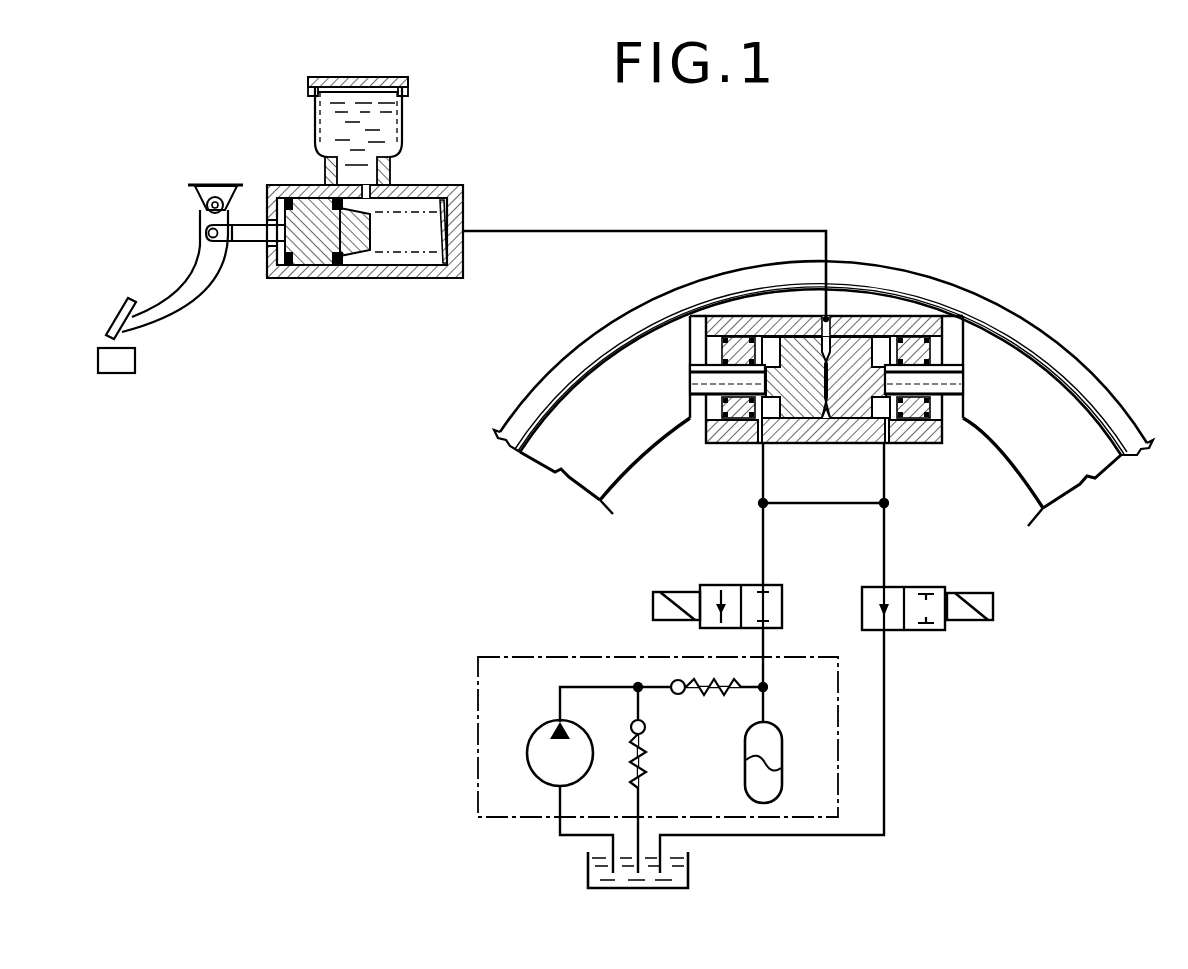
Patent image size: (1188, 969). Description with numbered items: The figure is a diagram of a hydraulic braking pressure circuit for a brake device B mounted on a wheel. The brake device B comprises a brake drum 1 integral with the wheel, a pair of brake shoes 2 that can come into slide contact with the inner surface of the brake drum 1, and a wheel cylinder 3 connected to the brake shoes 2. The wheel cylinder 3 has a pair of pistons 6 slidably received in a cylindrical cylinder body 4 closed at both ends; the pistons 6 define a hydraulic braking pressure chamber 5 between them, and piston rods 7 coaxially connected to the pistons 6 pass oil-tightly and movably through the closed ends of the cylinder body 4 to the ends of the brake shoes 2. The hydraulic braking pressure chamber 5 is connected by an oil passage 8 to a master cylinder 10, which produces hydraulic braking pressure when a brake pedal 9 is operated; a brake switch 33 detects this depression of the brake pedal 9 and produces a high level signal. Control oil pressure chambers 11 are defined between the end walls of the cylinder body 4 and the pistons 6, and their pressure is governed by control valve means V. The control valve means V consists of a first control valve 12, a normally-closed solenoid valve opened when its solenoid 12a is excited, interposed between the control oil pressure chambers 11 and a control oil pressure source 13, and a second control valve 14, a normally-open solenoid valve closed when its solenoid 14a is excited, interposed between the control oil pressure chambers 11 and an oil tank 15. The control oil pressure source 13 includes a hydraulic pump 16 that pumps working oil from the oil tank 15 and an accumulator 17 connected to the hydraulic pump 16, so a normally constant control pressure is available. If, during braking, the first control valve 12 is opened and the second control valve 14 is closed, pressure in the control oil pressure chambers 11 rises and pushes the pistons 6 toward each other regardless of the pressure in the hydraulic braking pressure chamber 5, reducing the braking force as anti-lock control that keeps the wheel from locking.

The brake drum 1 is at (1058, 300).
The brake shoes 2 is at (613, 367).
The wheel cylinder 3 is at (718, 442).
The cylinder body 4 is at (885, 323).
The hydraulic braking pressure chamber 5 is at (824, 420).
The pistons 6 is at (787, 337).
The piston rods 7 is at (700, 365).
The oil passage 8 is at (657, 231).
The brake pedal 9 is at (190, 290).
The master cylinder 10 is at (446, 185).
The control oil pressure chambers 11 is at (756, 428).
The first control valve 12 is at (782, 603).
The solenoid 12a is at (655, 592).
The control oil pressure source 13 is at (581, 657).
The second control valve 14 is at (862, 606).
The solenoid 14a is at (972, 620).
The oil tank 15 is at (688, 882).
The hydraulic pump 16 is at (538, 738).
The accumulator 17 is at (745, 745).
The brake switch 33 is at (123, 370).
The disk brake device B is at (942, 272).
The control valve means V is at (863, 557).